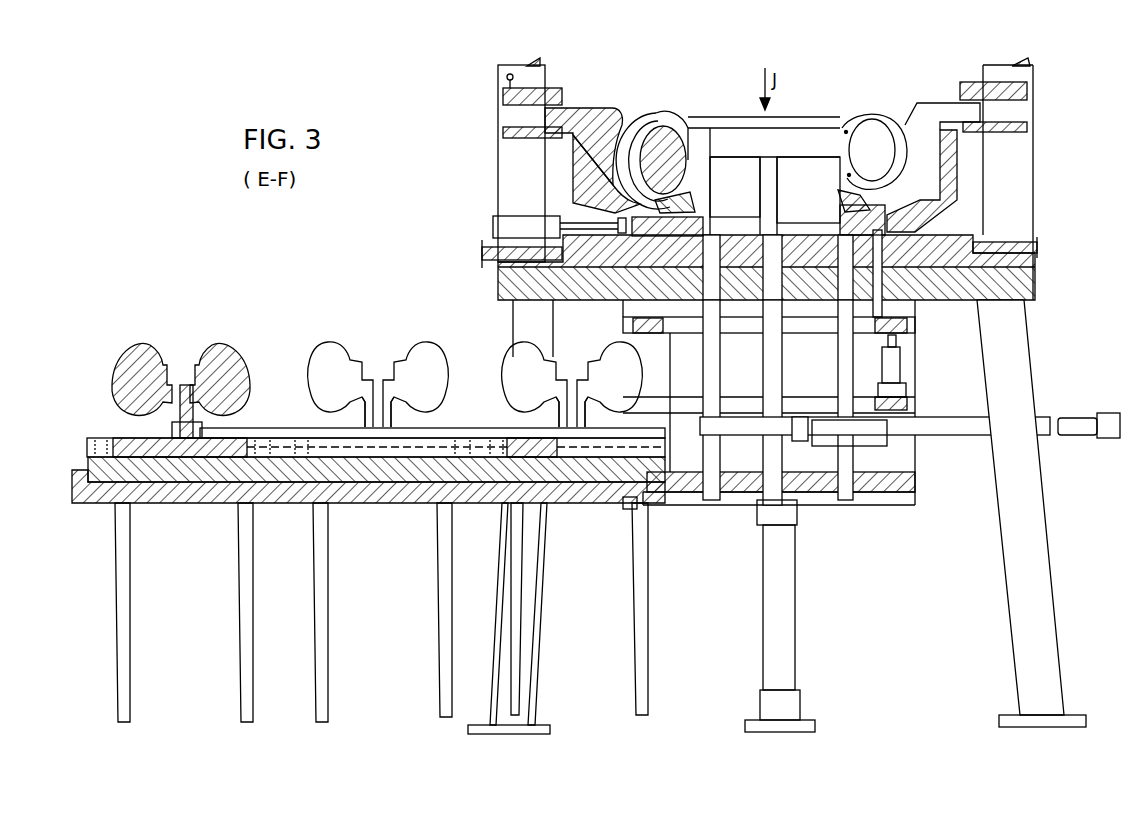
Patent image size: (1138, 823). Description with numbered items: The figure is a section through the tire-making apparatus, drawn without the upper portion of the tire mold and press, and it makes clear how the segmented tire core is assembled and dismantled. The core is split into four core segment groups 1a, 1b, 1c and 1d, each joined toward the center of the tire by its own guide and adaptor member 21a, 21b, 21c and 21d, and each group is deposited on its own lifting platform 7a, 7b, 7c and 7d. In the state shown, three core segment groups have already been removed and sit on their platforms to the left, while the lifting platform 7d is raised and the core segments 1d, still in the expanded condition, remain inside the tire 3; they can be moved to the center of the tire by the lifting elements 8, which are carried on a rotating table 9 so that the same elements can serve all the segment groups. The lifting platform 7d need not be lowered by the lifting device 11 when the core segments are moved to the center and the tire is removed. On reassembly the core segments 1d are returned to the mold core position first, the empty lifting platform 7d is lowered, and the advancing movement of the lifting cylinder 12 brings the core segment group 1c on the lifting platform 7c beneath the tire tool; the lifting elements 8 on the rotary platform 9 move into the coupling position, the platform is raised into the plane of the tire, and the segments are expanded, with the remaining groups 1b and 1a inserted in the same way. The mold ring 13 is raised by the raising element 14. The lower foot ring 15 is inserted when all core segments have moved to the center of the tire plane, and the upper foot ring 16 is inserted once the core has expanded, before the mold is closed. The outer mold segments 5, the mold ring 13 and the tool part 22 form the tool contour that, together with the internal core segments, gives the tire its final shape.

The core segment group 1a is at (130, 352).
The core segment group 1b is at (332, 352).
The core segment group 1c is at (510, 352).
The core segments 1d is at (660, 140).
The tire 3 is at (637, 128).
The outer mold segments 5 is at (572, 112).
The lifting platform 7a is at (200, 500).
The lifting platform 7b is at (395, 497).
The lifting platform 7c is at (600, 497).
The lifting platform 7d is at (823, 242).
The lifting elements 8 is at (493, 226).
The rotating table 9 is at (480, 255).
The lifting device 11 is at (790, 551).
The lifting cylinder 12 is at (930, 435).
The mold ring 13 is at (838, 190).
The raising element 14 is at (897, 367).
The lower foot ring 15 is at (717, 177).
The upper foot ring 16 is at (683, 130).
The adaptor member 21a is at (172, 426).
The adaptor member 21b is at (362, 420).
The adaptor member 21c is at (556, 420).
The adaptor member 21d is at (708, 208).
The tool part 22 is at (587, 156).